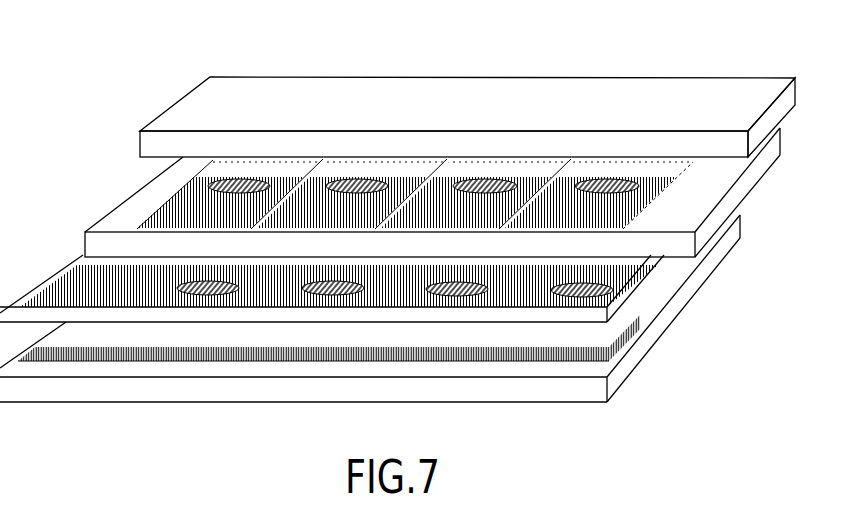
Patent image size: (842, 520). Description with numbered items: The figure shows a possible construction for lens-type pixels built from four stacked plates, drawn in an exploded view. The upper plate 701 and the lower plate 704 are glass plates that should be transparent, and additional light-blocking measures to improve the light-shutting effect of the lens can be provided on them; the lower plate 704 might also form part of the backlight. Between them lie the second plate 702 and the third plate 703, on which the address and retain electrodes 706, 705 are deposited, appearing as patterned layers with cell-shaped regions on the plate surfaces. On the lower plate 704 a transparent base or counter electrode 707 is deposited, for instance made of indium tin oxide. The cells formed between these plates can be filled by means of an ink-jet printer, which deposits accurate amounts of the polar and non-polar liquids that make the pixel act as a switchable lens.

The upper plate 701 is at (497, 94).
The second plate 702 is at (764, 152).
The third plate 703 is at (622, 297).
The lower plate 704 is at (639, 347).
The retain electrode 705 is at (182, 182).
The address electrode 706 is at (55, 277).
The transparent base or counter electrode 707 is at (33, 363).